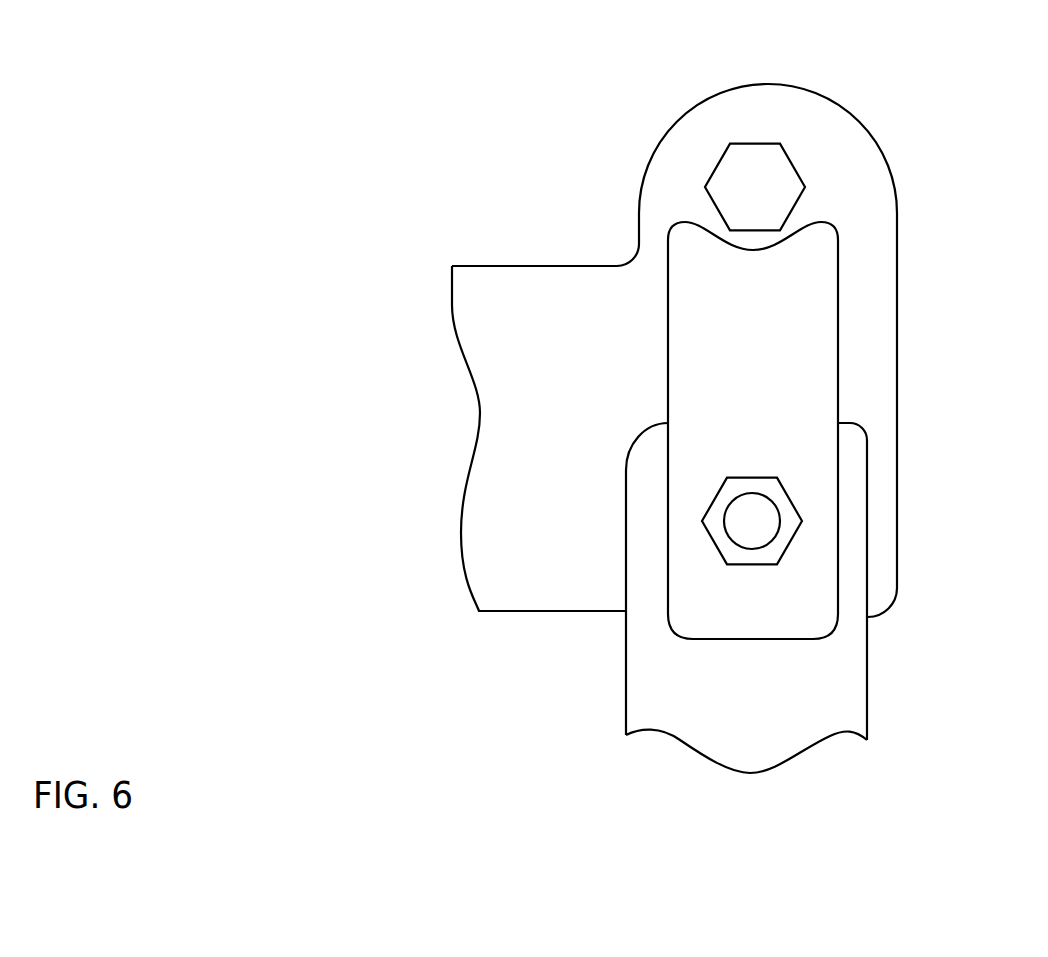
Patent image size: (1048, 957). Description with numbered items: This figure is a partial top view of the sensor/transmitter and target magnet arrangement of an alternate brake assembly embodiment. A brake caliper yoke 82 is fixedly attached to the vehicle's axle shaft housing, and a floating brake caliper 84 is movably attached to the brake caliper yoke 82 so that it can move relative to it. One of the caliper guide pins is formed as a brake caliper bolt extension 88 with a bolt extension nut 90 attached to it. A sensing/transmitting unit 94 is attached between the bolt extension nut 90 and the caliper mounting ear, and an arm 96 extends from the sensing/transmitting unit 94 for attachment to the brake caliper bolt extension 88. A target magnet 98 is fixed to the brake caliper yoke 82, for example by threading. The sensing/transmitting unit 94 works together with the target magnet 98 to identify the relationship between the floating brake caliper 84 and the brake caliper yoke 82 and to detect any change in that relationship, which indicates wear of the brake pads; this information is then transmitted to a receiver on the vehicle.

The brake caliper yoke 82 is at (658, 210).
The floating brake caliper 84 is at (660, 709).
The brake caliper bolt extension 88 is at (758, 527).
The bolt extension nut 90 is at (758, 560).
The sensing/transmitting unit 94 is at (823, 274).
The arm 96 is at (810, 408).
The target magnet 98 is at (768, 201).